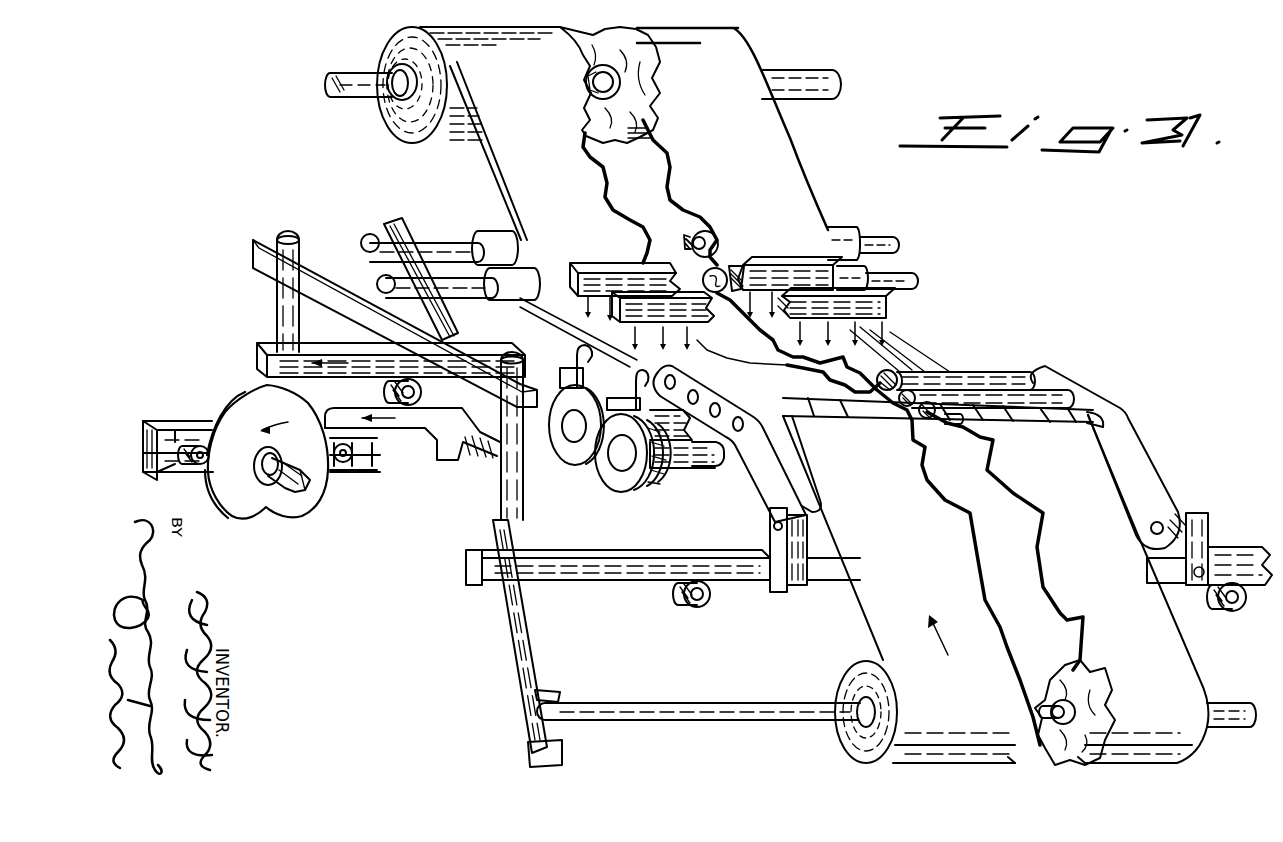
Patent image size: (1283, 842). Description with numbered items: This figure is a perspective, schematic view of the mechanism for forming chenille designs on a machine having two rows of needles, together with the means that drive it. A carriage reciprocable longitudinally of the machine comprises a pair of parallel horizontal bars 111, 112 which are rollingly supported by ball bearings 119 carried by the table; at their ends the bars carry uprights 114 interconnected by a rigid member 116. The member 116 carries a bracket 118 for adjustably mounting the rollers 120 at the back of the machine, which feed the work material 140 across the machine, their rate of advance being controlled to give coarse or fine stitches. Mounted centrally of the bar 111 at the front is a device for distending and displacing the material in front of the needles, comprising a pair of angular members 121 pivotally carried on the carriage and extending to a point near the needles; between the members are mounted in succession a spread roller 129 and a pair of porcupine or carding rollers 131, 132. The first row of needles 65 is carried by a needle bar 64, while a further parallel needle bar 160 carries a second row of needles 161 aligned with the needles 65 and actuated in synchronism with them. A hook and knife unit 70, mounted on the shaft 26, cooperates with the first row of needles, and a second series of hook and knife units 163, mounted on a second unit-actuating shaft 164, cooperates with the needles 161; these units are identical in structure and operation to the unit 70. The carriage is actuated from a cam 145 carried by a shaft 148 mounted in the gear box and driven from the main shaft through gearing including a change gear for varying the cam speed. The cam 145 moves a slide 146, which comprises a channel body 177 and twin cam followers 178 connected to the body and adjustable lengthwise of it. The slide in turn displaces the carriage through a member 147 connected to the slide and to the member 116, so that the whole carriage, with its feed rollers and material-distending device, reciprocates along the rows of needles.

The shaft 26 is at (692, 480).
The needle bar 64 is at (925, 300).
The needles 65 is at (645, 330).
The hook and knife unit 70 is at (626, 490).
The horizontal bar 111 is at (615, 577).
The horizontal bar 112 is at (257, 354).
The uprights 114 is at (283, 297).
The rigid member 116 is at (490, 468).
The bracket 118 is at (419, 196).
The ball bearings 119 is at (391, 393).
The rollers 120 is at (862, 272).
The angular members 121 is at (790, 480).
The spread roller 129 is at (1045, 407).
The porcupine roller 131 is at (1025, 390).
The porcupine roller 132 is at (985, 370).
The web 140 is at (777, 164).
The cam 145 is at (312, 500).
The slide 146 is at (190, 420).
The member 147 is at (420, 437).
The shaft 148 is at (285, 489).
The needle bar 160 is at (597, 268).
The needles 161 is at (600, 300).
The hook and knife units 163 is at (570, 468).
The unit-actuating shaft 164 is at (681, 470).
The channel body 177 is at (150, 422).
The cam followers 178 is at (190, 468).